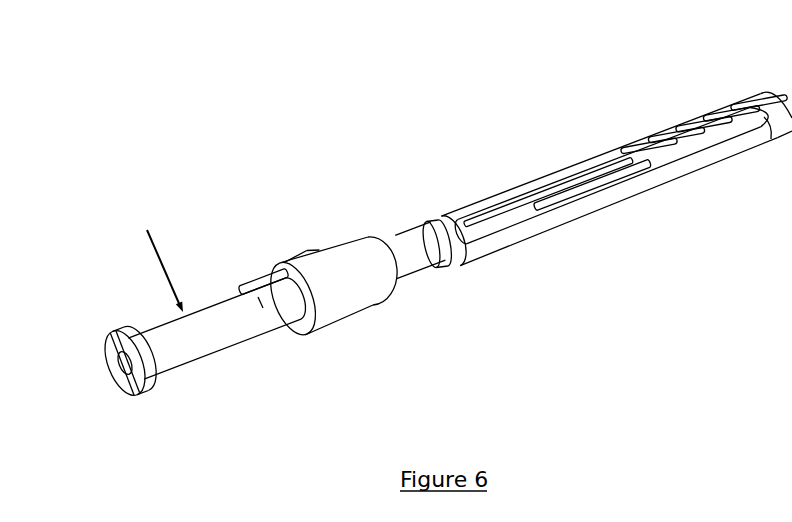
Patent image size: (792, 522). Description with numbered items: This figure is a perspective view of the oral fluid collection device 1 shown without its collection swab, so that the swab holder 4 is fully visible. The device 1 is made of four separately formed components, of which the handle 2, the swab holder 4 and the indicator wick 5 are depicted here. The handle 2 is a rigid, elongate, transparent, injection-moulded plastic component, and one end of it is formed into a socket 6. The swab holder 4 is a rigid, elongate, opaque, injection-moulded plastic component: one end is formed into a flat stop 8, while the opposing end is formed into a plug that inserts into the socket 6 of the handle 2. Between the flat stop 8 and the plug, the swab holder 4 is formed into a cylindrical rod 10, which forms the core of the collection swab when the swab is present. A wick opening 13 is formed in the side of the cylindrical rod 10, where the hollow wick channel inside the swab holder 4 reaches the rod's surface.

The oral fluid collection device 1 is at (406, 112).
The handle 2 is at (494, 236).
The swab holder 4 is at (158, 257).
The indicator wick 5 is at (253, 274).
The socket 6 is at (343, 255).
The flat stop 8 is at (112, 372).
The cylindrical rod 10 is at (197, 345).
The wick opening 13 is at (260, 297).